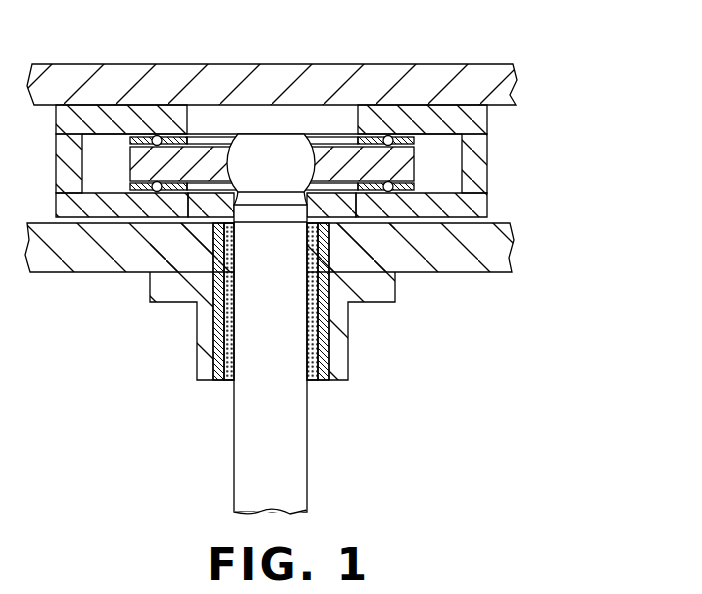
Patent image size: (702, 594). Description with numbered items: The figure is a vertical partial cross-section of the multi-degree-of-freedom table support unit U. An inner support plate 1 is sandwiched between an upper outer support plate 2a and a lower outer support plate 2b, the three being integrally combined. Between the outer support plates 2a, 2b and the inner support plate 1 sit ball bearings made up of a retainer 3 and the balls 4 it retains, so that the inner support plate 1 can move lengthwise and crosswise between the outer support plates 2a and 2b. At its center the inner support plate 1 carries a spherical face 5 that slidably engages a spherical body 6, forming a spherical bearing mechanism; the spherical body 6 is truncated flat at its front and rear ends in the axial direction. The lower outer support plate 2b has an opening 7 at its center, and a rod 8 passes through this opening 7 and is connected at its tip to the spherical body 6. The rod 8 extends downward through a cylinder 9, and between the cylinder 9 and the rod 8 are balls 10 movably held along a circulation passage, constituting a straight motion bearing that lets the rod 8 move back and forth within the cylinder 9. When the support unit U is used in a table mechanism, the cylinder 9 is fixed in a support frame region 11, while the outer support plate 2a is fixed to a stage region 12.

The inner support plate 1 is at (200, 157).
The outer support plate 2a is at (372, 122).
The outer support plate 2b is at (437, 210).
The retainer 3 is at (414, 185).
The balls 4 is at (391, 130).
The spherical face 5 is at (322, 148).
The spherical body 6 is at (272, 150).
The opening 7 is at (205, 223).
The rod 8 is at (302, 451).
The cylinder 9 is at (203, 347).
The balls 10 is at (333, 353).
The support frame region 11 is at (50, 258).
The stage region 12 is at (110, 80).
The support unit U is at (118, 355).